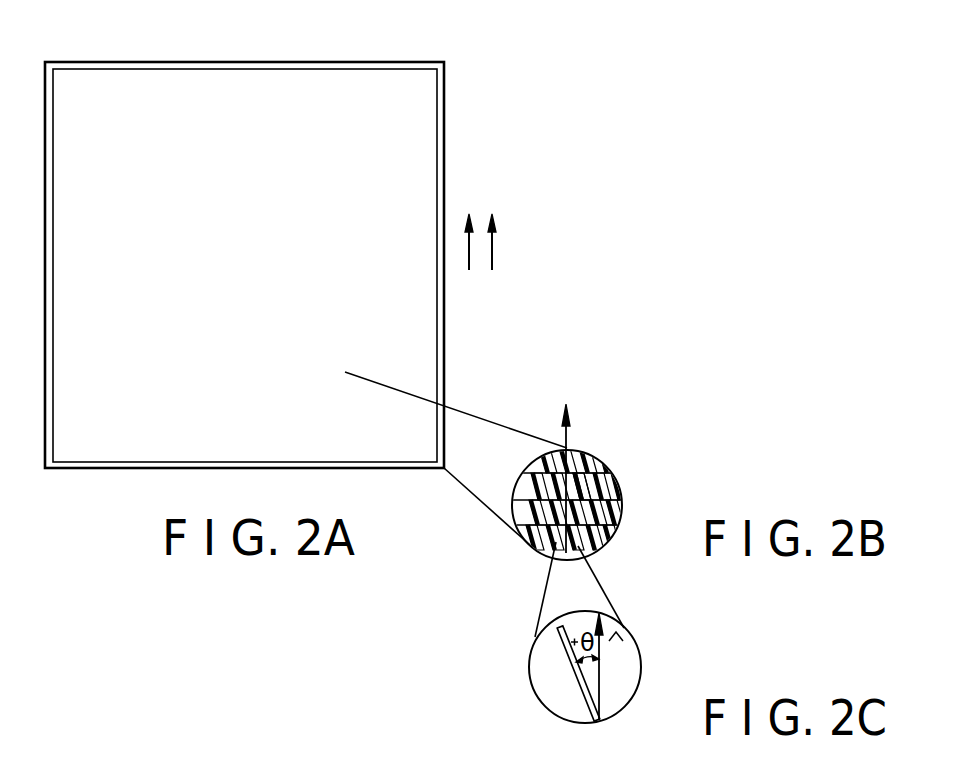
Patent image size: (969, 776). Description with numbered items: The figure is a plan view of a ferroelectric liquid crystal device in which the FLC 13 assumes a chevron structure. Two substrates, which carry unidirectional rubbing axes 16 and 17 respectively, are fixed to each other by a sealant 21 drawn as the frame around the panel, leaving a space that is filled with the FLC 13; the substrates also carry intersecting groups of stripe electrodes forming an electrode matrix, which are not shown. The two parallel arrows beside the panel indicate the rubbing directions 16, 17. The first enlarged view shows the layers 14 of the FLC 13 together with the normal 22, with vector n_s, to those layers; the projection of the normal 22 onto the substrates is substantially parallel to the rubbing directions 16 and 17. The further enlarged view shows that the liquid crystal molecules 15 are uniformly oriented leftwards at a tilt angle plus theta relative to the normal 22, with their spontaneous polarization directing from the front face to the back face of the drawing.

In FIG. 2A, the FLC 13 is at (193, 97).
In FIG. 2A, the sealant 21 is at (372, 62).
In FIG. 2A, the rubbing axis 16 is at (466, 250).
In FIG. 2A, the rubbing axis 17 is at (493, 247).
In FIG. 2B, the normal 22 is at (562, 437).
In FIG. 2C, the normal 22 is at (602, 694).
In FIG. 2B, the liquid crystal molecules 15 is at (610, 485).
In FIG. 2C, the liquid crystal molecules 15 is at (587, 700).
In FIG. 2B, the layers 14 is at (612, 510).